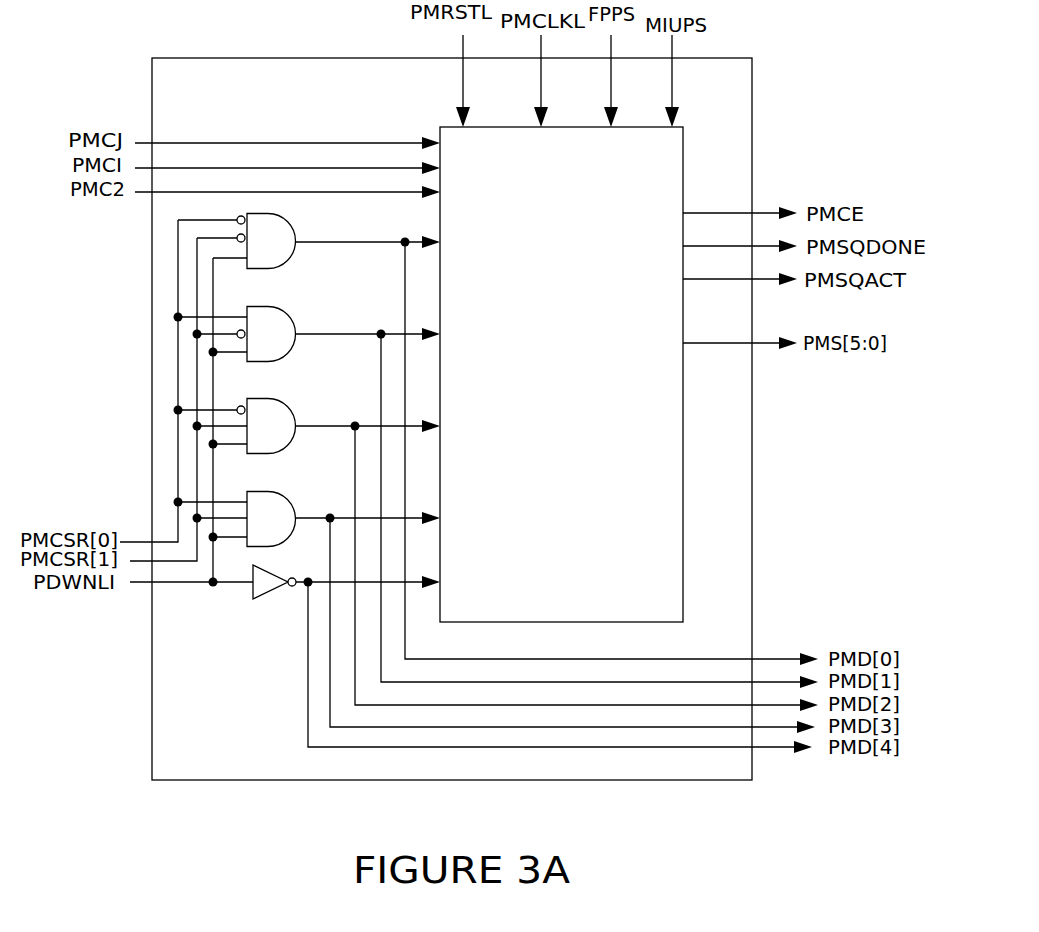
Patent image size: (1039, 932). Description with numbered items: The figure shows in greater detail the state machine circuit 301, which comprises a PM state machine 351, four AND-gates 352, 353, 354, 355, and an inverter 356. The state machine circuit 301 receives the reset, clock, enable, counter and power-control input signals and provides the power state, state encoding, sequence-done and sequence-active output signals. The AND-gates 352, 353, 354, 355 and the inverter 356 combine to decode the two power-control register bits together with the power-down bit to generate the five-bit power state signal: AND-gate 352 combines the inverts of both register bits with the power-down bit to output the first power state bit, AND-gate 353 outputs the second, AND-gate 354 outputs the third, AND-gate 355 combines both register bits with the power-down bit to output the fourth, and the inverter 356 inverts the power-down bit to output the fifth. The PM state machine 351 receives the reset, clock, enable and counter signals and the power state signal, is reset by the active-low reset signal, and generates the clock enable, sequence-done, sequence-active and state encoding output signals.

The state machine circuit 301 is at (452, 419).
The PM state machine 351 is at (561, 374).
The AND-gate 352 is at (266, 241).
The AND-gate 353 is at (266, 334).
The AND-gate 354 is at (266, 426).
The AND-gate 355 is at (271, 519).
The inverter 356 is at (258, 600).